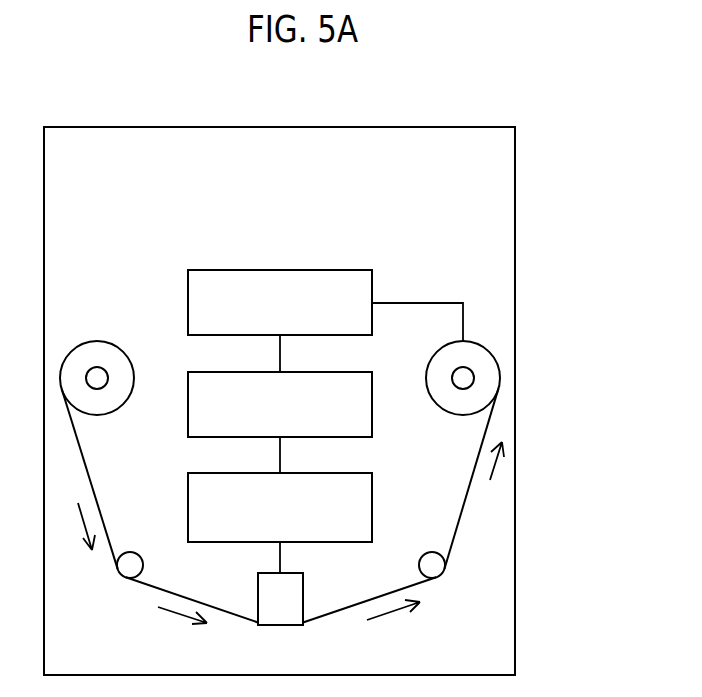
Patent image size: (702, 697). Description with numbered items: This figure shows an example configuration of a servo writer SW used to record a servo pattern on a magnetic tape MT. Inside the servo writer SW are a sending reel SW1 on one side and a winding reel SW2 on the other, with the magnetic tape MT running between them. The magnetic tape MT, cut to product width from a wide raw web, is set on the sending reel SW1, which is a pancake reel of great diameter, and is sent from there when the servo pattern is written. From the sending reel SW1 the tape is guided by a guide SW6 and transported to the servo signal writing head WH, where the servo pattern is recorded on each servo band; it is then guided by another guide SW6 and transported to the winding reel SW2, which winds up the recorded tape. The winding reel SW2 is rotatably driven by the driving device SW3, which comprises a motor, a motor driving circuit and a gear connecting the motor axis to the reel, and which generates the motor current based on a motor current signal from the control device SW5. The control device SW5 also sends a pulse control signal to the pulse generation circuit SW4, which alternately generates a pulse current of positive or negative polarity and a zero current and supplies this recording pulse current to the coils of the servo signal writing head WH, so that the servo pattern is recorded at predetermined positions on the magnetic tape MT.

The servo writer SW is at (440, 128).
The sending reel SW1 is at (95, 341).
The winding reel SW2 is at (488, 350).
The driving device SW3 is at (348, 270).
The pulse generation circuit SW4 is at (188, 500).
The control device SW5 is at (372, 422).
The guide SW6 is at (128, 578).
The servo signal writing head WH is at (303, 590).
The magnetic tape MT is at (458, 532).